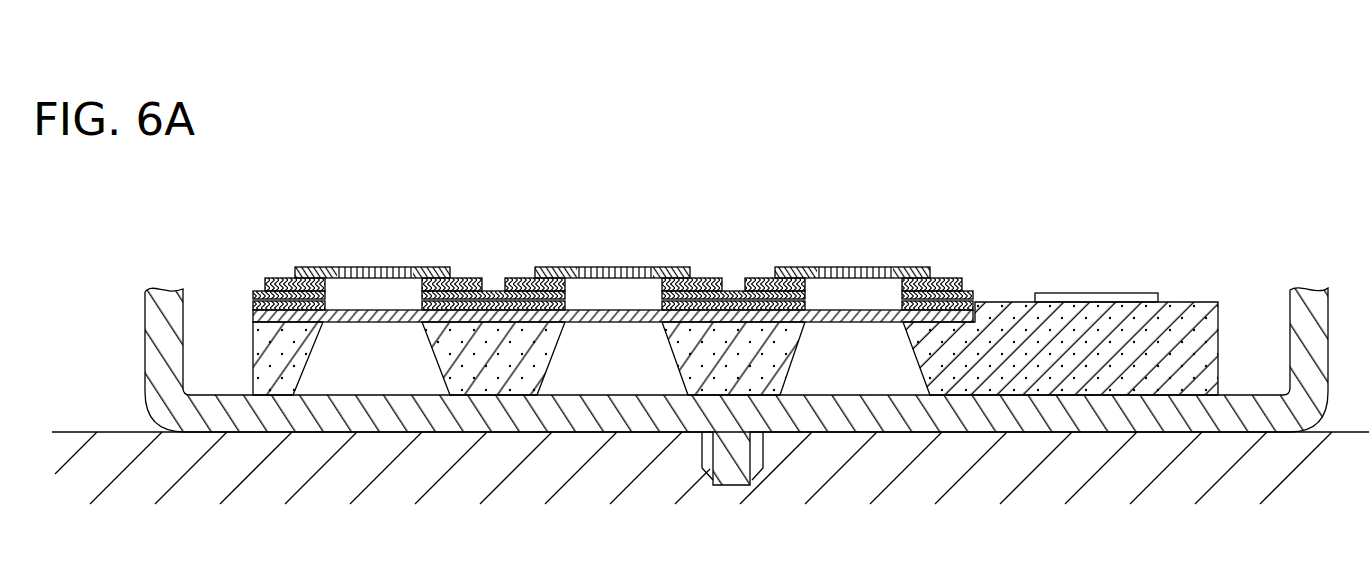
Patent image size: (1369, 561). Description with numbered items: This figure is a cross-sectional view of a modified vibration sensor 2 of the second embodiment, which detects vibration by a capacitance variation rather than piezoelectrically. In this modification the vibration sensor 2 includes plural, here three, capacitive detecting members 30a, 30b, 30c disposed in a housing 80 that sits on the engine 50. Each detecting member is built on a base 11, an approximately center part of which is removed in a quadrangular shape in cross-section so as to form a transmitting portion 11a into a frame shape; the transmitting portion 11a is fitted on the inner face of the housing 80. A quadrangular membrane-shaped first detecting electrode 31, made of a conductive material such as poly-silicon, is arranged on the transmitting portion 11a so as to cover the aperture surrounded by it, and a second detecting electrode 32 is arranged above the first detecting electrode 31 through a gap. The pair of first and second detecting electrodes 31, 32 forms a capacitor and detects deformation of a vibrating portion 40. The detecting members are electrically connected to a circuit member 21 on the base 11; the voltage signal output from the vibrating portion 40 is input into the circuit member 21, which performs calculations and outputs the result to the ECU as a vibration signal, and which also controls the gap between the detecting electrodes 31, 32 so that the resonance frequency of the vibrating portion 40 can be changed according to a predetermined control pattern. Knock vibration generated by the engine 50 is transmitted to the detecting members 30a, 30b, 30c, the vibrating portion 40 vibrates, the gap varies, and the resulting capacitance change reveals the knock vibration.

The vibration sensor 2 is at (1122, 182).
The base 11 is at (1185, 308).
The transmitting portion 11a is at (263, 360).
The circuit member 21 is at (1095, 301).
The detecting member 30a is at (315, 247).
The detecting member 30b is at (555, 247).
The detecting member 30c is at (795, 247).
The first detecting electrode 31 is at (378, 321).
The second detecting electrode 32 is at (432, 268).
The vibrating portion 40 is at (373, 247).
The engine 50 is at (92, 452).
The housing 80 is at (158, 323).